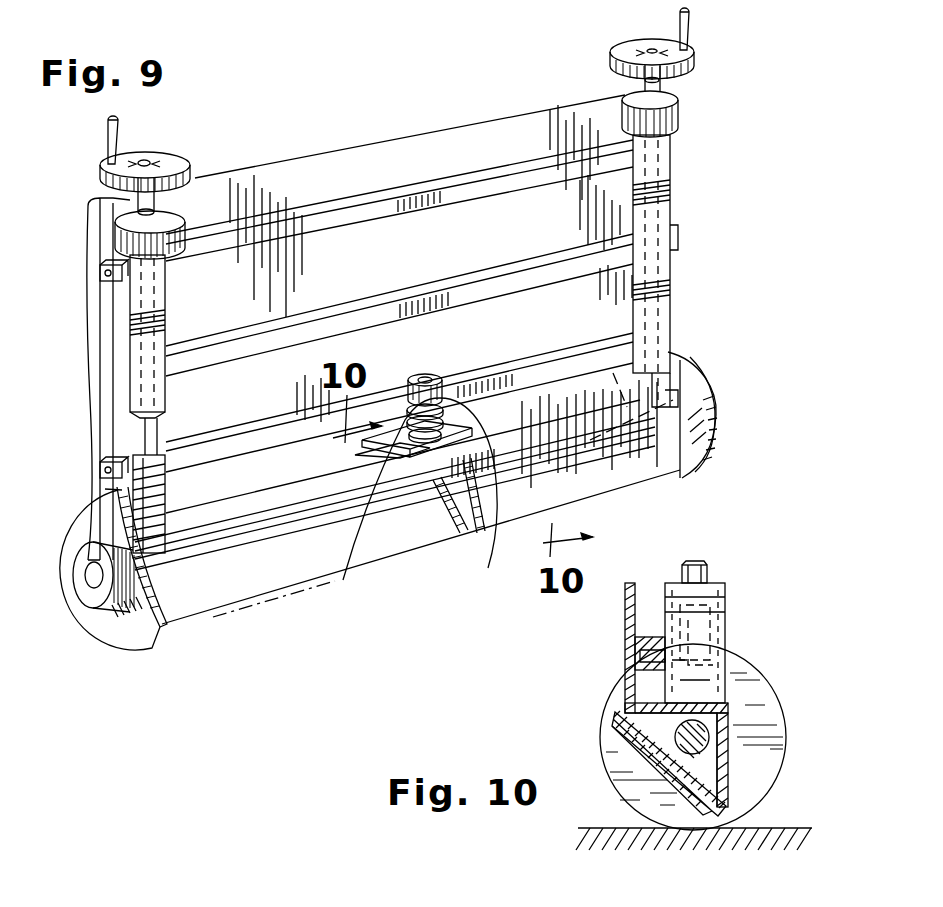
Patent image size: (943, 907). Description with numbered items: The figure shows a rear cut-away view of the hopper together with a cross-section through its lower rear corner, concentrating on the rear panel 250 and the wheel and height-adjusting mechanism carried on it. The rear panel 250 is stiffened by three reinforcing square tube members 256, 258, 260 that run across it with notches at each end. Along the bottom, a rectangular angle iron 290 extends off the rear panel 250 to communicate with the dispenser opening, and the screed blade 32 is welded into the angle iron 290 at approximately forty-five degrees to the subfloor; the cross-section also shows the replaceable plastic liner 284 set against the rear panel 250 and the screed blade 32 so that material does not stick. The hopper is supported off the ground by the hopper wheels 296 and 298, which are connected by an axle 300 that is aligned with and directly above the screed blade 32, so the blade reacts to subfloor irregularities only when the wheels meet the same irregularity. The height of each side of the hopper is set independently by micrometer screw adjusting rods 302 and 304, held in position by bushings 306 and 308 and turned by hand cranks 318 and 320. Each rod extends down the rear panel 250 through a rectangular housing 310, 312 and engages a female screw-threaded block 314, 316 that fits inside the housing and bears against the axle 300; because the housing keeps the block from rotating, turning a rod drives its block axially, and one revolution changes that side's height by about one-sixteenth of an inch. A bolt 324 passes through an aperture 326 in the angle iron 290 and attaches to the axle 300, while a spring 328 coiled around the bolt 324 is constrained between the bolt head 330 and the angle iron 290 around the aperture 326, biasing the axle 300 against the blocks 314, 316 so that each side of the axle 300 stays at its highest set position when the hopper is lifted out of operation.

In FIG. 9, the rear panel 250 is at (291, 178).
In FIG. 9, the reinforcing square tube member 256 is at (345, 212).
In FIG. 9, the reinforcing square tube member 258 is at (495, 268).
In FIG. 9, the reinforcing square tube member 260 is at (657, 290).
In FIG. 10, the reinforcing square tube member 260 is at (650, 641).
In FIG. 9, the angle iron 290 is at (640, 482).
In FIG. 10, the angle iron 290 is at (730, 767).
In FIG. 9, the hopper wheel 296 is at (82, 515).
In FIG. 9, the hopper wheel 298 is at (682, 344).
In FIG. 9, the axle 300 is at (262, 552).
In FIG. 10, the axle 300 is at (714, 718).
In FIG. 9, the micrometer screw adjusting rod 302 is at (88, 212).
In FIG. 9, the micrometer screw adjusting rod 304 is at (672, 90).
In FIG. 10, the micrometer screw adjusting rod 304 is at (708, 572).
In FIG. 9, the bushing 306 is at (183, 218).
In FIG. 9, the bushing 308 is at (678, 125).
In FIG. 9, the rectangular housing 310 is at (110, 337).
In FIG. 9, the rectangular housing 312 is at (672, 207).
In FIG. 9, the female screw-threaded block 314 is at (173, 560).
In FIG. 9, the female screw-threaded block 316 is at (656, 348).
In FIG. 10, the female screw-threaded block 316 is at (705, 638).
In FIG. 9, the hand crank 318 is at (120, 135).
In FIG. 9, the hand crank 320 is at (695, 40).
In FIG. 9, the bolt 324 is at (343, 580).
In FIG. 9, the aperture 326 is at (445, 562).
In FIG. 9, the spring 328 is at (403, 460).
In FIG. 9, the head 330 is at (466, 462).
In FIG. 9, the screed blade 32 is at (488, 568).
In FIG. 10, the screed blade 32 is at (618, 720).
In FIG. 10, the plastic liner 284 is at (632, 802).